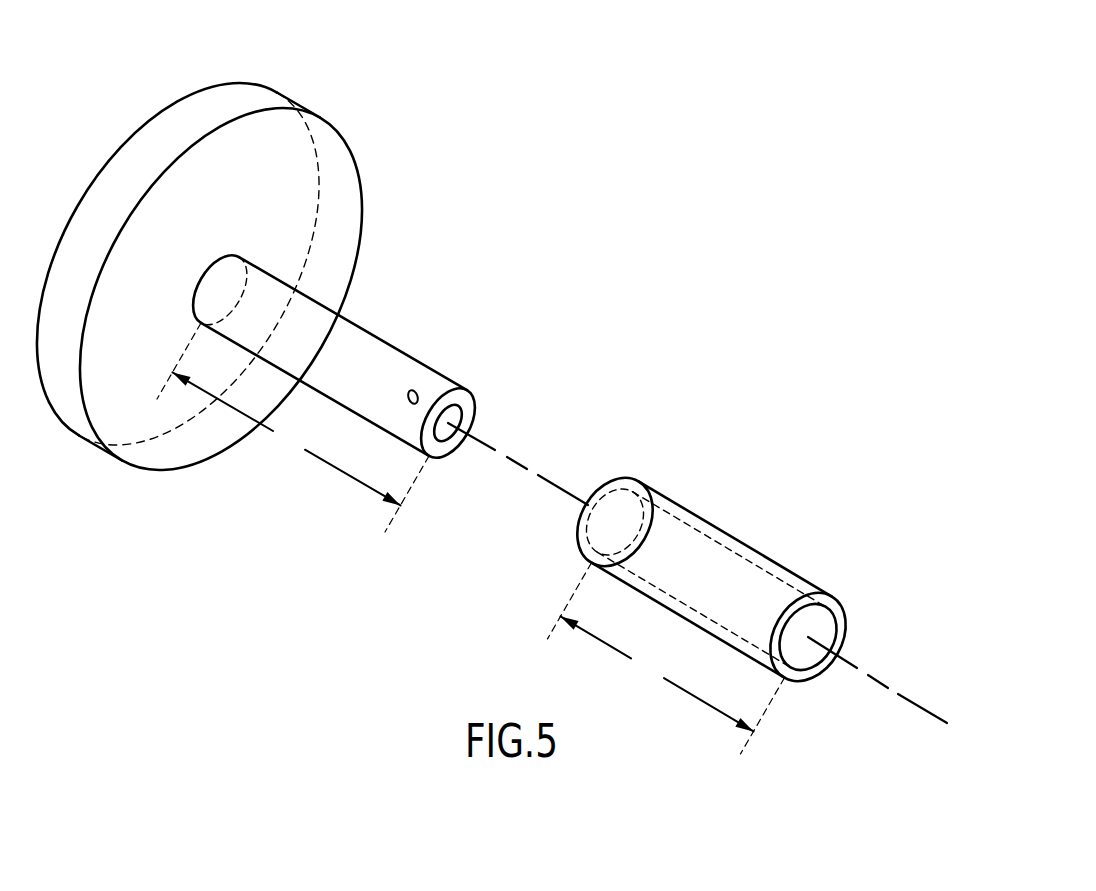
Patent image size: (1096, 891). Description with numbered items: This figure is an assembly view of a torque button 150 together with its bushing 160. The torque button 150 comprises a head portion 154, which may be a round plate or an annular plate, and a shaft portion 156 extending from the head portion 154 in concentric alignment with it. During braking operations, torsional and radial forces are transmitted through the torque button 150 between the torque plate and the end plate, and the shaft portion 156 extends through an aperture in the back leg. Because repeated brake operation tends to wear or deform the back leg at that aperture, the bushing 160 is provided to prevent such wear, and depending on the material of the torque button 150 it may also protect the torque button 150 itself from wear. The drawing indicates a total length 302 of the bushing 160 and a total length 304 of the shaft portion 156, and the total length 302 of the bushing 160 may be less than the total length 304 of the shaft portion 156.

The torque button 150 is at (364, 88).
The head portion 154 is at (175, 117).
The shaft portion 156 is at (407, 357).
The bushing 160 is at (747, 545).
The total length of bushing 302 is at (666, 658).
The total length of shaft portion 304 is at (293, 427).